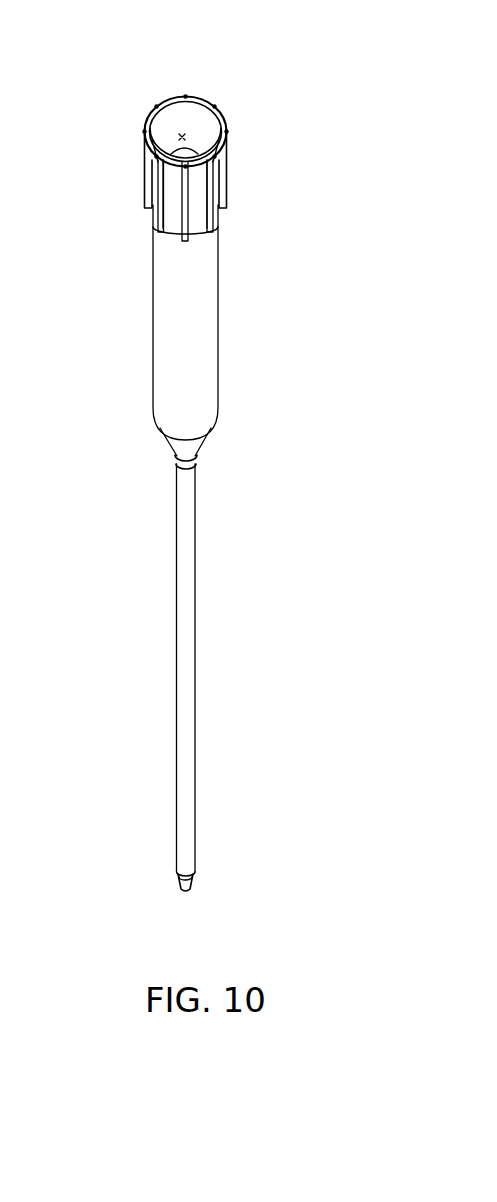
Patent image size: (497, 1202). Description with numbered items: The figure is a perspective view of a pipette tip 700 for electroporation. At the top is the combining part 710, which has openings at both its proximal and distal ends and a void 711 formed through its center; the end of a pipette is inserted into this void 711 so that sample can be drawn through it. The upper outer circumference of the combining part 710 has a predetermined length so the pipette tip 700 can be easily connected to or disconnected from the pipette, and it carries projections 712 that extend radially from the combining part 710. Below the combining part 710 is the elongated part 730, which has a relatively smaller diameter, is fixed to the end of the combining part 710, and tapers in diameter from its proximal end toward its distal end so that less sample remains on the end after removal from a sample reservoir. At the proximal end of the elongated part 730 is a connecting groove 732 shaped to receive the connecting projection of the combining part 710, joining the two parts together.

The pipette tip 700 is at (258, 156).
The void 711 is at (185, 128).
The projections 712 is at (150, 205).
The combining part 710 is at (210, 285).
The connecting groove 732 is at (185, 438).
The elongated part 730 is at (188, 625).